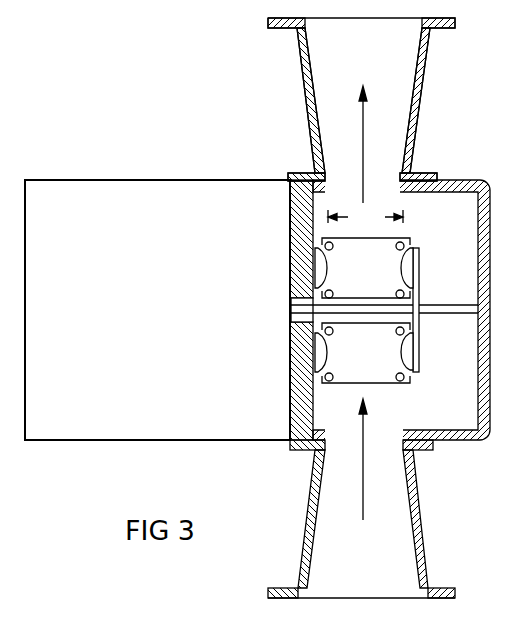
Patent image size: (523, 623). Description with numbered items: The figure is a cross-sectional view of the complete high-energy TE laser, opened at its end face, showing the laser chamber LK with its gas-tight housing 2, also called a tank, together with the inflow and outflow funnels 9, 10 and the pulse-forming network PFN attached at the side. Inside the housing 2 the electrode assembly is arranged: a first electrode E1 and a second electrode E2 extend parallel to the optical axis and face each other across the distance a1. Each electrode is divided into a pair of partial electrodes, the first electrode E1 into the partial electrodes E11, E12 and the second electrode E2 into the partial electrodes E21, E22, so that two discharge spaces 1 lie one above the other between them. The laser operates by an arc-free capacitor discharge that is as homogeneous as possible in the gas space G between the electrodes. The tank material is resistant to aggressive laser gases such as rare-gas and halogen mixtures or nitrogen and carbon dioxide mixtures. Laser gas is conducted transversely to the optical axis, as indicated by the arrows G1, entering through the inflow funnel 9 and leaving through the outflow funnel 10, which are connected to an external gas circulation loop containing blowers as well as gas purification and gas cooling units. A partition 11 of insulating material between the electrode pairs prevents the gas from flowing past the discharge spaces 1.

The outflow funnel 10 is at (425, 70).
The inflow funnel 9 is at (425, 538).
The housing 2 is at (489, 207).
The partition 11 is at (465, 313).
The discharge space 1 is at (370, 278).
The first electrode E1 is at (434, 299).
The partial electrode E11 is at (422, 253).
The partial electrode E12 is at (419, 357).
The second electrode E2 is at (281, 317).
The partial electrode E21 is at (322, 268).
The partial electrode E22 is at (318, 351).
The distance a1 is at (365, 216).
The arrows G1 is at (365, 118).
The gas space G is at (432, 416).
The laser chamber LK is at (458, 408).
The pulse-forming network PFN is at (157, 310).